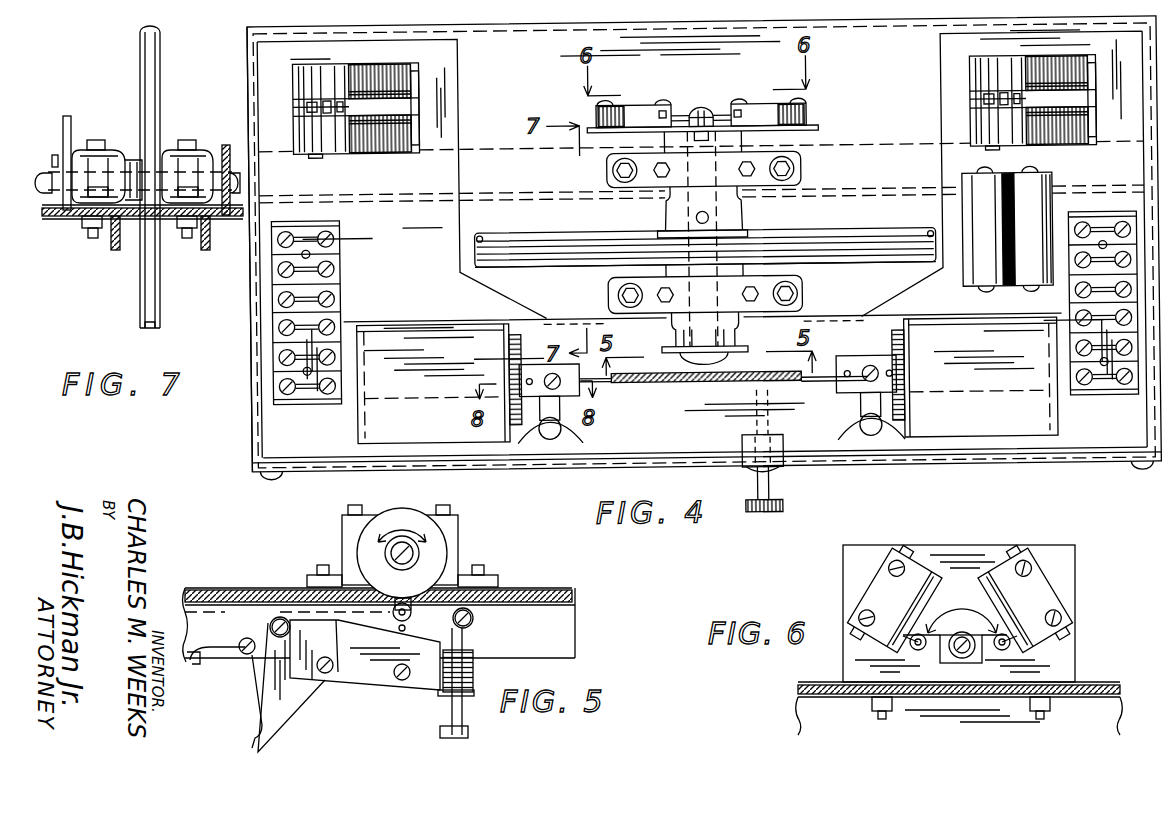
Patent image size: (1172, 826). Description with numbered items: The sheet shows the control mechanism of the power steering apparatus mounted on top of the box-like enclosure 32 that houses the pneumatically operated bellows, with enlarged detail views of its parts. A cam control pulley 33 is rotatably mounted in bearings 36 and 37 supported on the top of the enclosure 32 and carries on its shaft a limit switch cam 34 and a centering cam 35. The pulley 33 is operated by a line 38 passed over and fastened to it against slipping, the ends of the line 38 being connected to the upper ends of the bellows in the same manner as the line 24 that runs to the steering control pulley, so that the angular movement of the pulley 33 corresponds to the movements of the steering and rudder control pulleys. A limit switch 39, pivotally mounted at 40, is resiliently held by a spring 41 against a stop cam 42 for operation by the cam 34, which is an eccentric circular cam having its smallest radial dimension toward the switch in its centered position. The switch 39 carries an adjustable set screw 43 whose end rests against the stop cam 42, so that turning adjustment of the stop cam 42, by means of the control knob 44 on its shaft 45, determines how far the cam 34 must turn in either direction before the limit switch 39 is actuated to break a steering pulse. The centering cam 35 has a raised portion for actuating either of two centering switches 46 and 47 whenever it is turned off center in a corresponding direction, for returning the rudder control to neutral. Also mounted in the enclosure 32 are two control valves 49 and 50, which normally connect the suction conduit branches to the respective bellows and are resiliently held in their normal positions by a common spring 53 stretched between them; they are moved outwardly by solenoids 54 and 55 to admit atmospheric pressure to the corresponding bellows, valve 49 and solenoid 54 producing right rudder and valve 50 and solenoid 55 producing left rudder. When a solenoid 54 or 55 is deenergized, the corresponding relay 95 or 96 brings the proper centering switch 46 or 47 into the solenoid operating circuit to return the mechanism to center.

In FIG. 4, the line 24 is at (479, 241).
In FIG. 7, the box-like enclosure 32 is at (66, 218).
In FIG. 4, the box-like enclosure 32 is at (246, 400).
In FIG. 5, the box-like enclosure 32 is at (572, 608).
In FIG. 6, the box-like enclosure 32 is at (798, 700).
In FIG. 7, the cam control pulley 33 is at (161, 65).
In FIG. 4, the cam control pulley 33 is at (802, 244).
In FIG. 7, the limit switch cam 34 is at (225, 145).
In FIG. 4, the limit switch cam 34 is at (716, 364).
In FIG. 5, the limit switch cam 34 is at (360, 532).
In FIG. 7, the centering cam 35 is at (55, 157).
In FIG. 4, the centering cam 35 is at (714, 122).
In FIG. 6, the centering cam 35 is at (955, 620).
In FIG. 7, the bearing 36 is at (190, 150).
In FIG. 4, the bearing 36 is at (705, 294).
In FIG. 5, the bearing 36 is at (452, 522).
In FIG. 7, the bearing 37 is at (100, 155).
In FIG. 4, the bearing 37 is at (704, 169).
In FIG. 4, the line 38 is at (857, 268).
In FIG. 5, the limit switch 39 is at (368, 672).
In FIG. 5, the pivot 40 is at (280, 617).
In FIG. 5, the spring 41 is at (256, 680).
In FIG. 5, the stop cam 42 is at (474, 626).
In FIG. 5, the adjustable set screw 43 is at (450, 718).
In FIG. 4, the control knob 44 is at (779, 511).
In FIG. 4, the shaft 45 is at (765, 483).
In FIG. 5, the shaft 45 is at (413, 610).
In FIG. 4, the centering switch 46 is at (756, 111).
In FIG. 6, the centering switch 46 is at (876, 596).
In FIG. 4, the centering switch 47 is at (648, 104).
In FIG. 6, the centering switch 47 is at (1040, 598).
In FIG. 4, the control valve 49 is at (530, 372).
In FIG. 4, the control valve 50 is at (858, 368).
In FIG. 4, the spring 53 is at (622, 392).
In FIG. 4, the solenoid 54 is at (431, 336).
In FIG. 4, the solenoid 55 is at (1006, 342).
In FIG. 4, the relay 95 is at (340, 167).
In FIG. 4, the relay 96 is at (1076, 156).